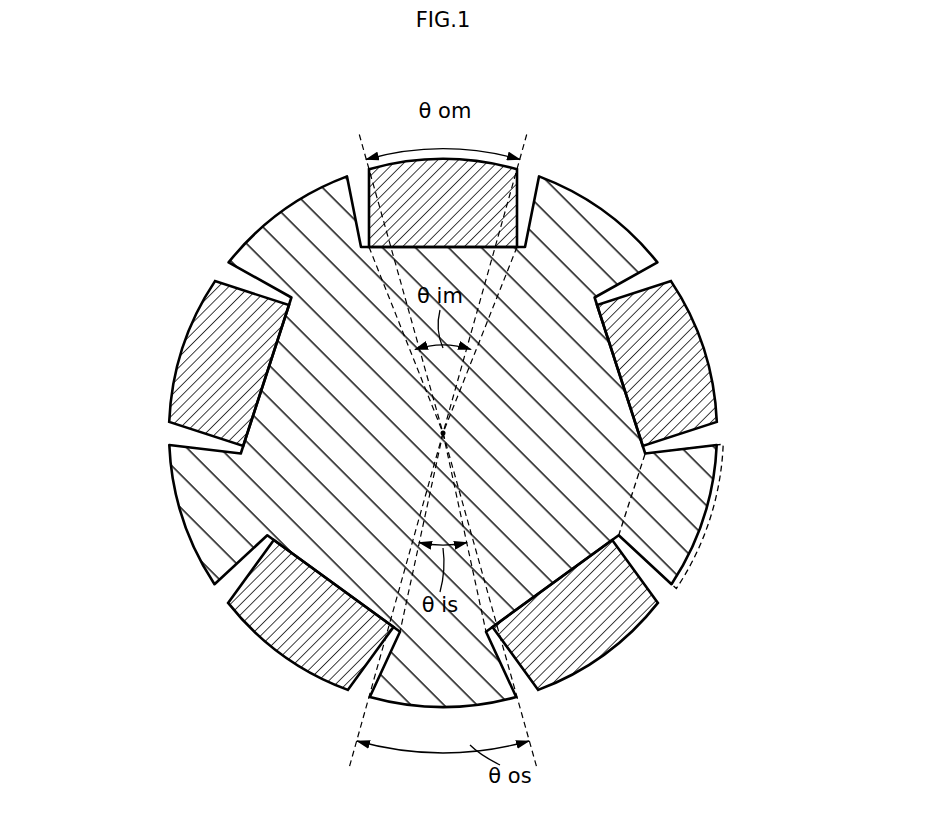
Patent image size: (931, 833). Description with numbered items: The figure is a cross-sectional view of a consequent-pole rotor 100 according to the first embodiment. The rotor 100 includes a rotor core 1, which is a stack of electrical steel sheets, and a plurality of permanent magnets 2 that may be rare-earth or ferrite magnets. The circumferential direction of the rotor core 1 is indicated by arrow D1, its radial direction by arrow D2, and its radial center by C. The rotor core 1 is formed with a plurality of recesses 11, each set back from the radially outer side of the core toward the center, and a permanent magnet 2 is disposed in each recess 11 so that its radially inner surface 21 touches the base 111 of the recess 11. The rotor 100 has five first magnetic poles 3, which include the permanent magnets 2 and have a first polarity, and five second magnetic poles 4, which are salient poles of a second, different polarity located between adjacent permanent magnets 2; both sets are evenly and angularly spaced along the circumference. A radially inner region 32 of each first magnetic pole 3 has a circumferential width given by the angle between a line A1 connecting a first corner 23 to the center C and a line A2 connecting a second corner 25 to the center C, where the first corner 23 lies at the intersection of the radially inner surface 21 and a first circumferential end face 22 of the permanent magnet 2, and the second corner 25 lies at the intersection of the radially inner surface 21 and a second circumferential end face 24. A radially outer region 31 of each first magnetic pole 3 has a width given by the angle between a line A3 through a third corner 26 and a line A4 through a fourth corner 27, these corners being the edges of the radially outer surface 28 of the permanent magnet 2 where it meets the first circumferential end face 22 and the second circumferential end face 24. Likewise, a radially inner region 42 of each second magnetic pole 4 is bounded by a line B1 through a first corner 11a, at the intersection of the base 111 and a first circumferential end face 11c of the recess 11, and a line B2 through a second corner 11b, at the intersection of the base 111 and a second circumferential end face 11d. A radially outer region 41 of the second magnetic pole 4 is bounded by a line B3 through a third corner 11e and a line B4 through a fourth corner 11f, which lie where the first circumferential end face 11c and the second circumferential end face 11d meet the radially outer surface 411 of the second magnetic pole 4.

The rotor 100 is at (384, 77).
The rotor core 1 is at (220, 536).
The permanent magnet 2 is at (185, 380).
The first magnetic pole 3 is at (437, 406).
The second magnetic pole 4 is at (224, 179).
The recess 11 is at (232, 590).
The first corner 11a is at (655, 470).
The second corner 11b is at (616, 546).
The first circumferential end face 11c is at (718, 436).
The second circumferential end face 11d is at (642, 566).
The third corner 11e is at (701, 438).
The fourth corner 11f is at (658, 588).
The radially inner surface 21 is at (268, 481).
The first circumferential end face 22 is at (208, 446).
The first corner 23 is at (330, 215).
The second circumferential end face 24 is at (254, 285).
The second corner 25 is at (245, 278).
The third corner 26 is at (364, 168).
The fourth corner 27 is at (521, 167).
The radially outer surface 28 is at (201, 295).
The radially outer region 31 is at (190, 338).
The radially inner region 32 is at (270, 372).
The radially outer region 41 is at (672, 527).
The radially inner region 42 is at (636, 492).
The base 111 is at (619, 357).
The radially outer surface 411 is at (707, 515).
The center C is at (440, 433).
The arrow indicating circumferential direction D1 is at (380, 112).
The arrow indicating radial direction D2 is at (360, 461).
The line A1 is at (396, 316).
The line A2 is at (490, 316).
The line A3 is at (392, 270).
The line A4 is at (493, 270).
The line B1 is at (470, 576).
The line B2 is at (418, 576).
The line B3 is at (476, 541).
The line B4 is at (411, 541).